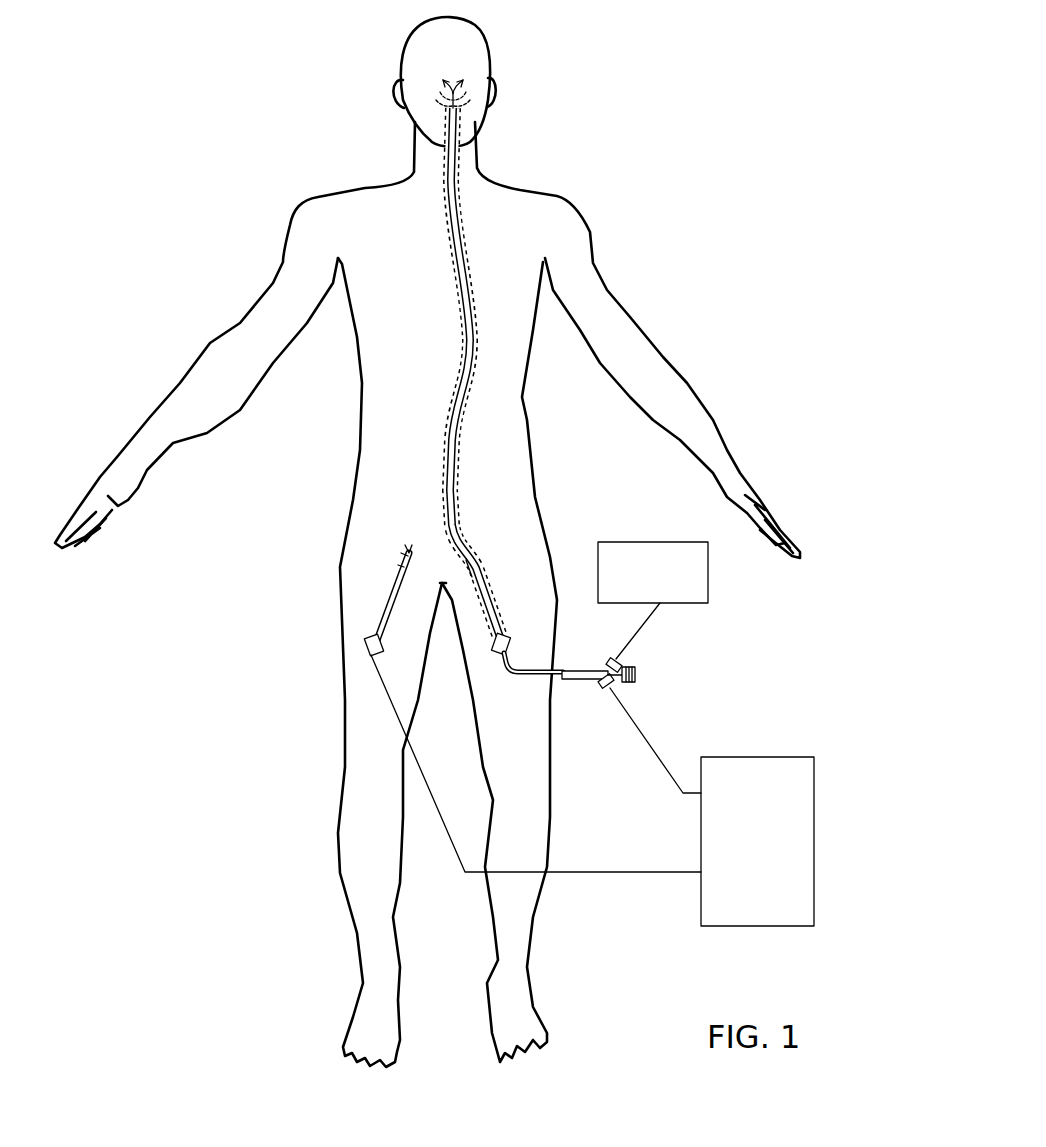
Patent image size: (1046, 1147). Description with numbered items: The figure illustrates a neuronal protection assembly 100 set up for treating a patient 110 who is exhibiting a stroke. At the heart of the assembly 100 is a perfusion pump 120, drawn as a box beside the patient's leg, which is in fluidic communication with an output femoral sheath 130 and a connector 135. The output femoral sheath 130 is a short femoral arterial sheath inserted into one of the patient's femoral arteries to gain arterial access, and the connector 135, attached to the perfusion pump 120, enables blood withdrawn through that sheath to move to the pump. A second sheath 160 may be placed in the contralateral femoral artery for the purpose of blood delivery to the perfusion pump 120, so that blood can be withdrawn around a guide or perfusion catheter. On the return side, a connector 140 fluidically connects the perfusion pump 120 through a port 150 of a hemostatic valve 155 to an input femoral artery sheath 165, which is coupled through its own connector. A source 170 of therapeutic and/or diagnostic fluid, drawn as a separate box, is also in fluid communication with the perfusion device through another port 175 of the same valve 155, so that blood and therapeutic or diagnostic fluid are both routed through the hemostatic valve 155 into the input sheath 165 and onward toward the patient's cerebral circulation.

The assembly 100 is at (585, 915).
The patient 110 is at (557, 195).
The perfusion pump 120 is at (753, 926).
The output femoral sheath 130 is at (398, 570).
The connector 135 is at (536, 763).
The connector 140 is at (644, 740).
The port 150 is at (647, 677).
The hemostatic valve 155 is at (617, 687).
The second sheath 160 is at (478, 565).
The input femoral artery sheath 165 is at (525, 683).
The source 170 is at (708, 570).
The port 175 is at (623, 631).